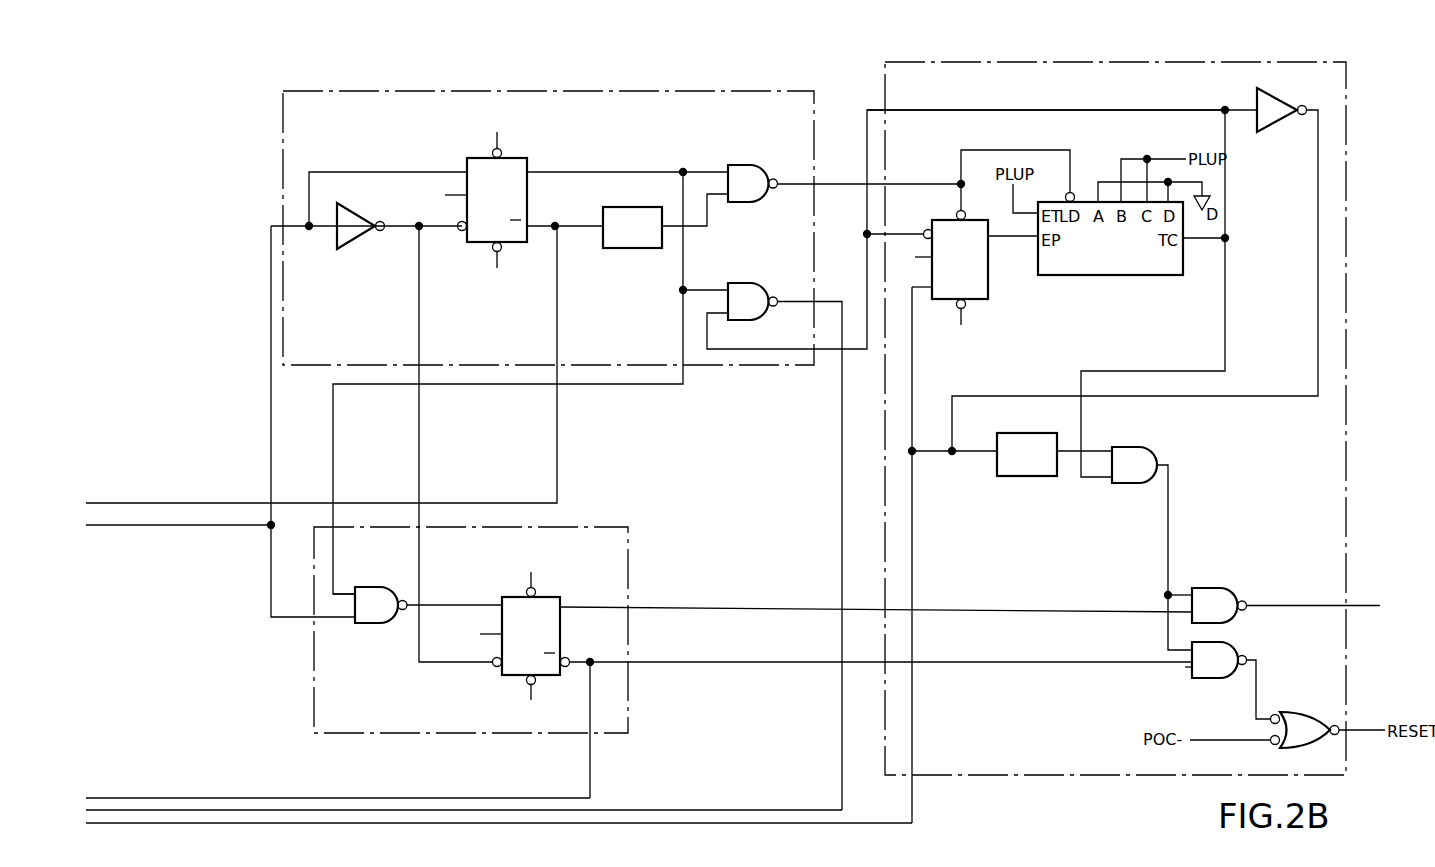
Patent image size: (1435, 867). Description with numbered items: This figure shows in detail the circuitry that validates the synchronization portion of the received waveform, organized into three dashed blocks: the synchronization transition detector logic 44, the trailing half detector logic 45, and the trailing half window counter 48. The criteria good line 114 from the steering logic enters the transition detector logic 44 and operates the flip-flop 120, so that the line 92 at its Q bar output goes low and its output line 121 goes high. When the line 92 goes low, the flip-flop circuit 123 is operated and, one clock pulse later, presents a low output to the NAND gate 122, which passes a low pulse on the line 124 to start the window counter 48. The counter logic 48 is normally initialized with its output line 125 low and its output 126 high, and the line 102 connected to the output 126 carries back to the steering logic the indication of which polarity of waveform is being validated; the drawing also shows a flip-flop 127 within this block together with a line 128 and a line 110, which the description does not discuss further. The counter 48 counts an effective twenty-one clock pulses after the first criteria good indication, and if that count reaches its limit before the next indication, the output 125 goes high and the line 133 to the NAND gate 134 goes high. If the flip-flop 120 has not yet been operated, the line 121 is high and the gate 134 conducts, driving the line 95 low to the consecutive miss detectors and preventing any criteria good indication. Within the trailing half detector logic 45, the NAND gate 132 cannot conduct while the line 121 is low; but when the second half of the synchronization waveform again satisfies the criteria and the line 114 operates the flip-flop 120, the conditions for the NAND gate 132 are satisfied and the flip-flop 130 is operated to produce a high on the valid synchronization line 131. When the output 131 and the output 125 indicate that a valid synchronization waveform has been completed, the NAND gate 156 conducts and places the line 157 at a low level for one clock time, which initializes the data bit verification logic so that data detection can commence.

The synchronization transition detector logic 44 is at (720, 91).
The trailing half detector logic 45 is at (592, 527).
The trailing half window counter 48 is at (963, 62).
The Q bar output line 92 is at (122, 500).
The criteria good line 114 is at (120, 528).
The signal line 110 is at (92, 797).
The inhibit line 95 is at (128, 809).
The polarity line 102 is at (157, 822).
The flip-flop 120 is at (516, 158).
The flip-flop output line 121 is at (652, 172).
The NAND gate 122 is at (755, 166).
The flip-flop circuit 123 is at (630, 207).
The start line 124 is at (946, 184).
The window counter output 125 is at (1083, 435).
The window counter output 126 is at (980, 445).
The JK flip-flop 127 is at (988, 286).
The inverted clock line 128 is at (421, 426).
The flip-flop 130 is at (550, 597).
The valid synchronization line 131 is at (1043, 610).
The NAND gate 132 is at (356, 588).
The timeout line 133 is at (1002, 110).
The NAND gate 134 is at (756, 285).
The NAND gate 156 is at (1204, 588).
The initializing line 157 is at (1357, 605).